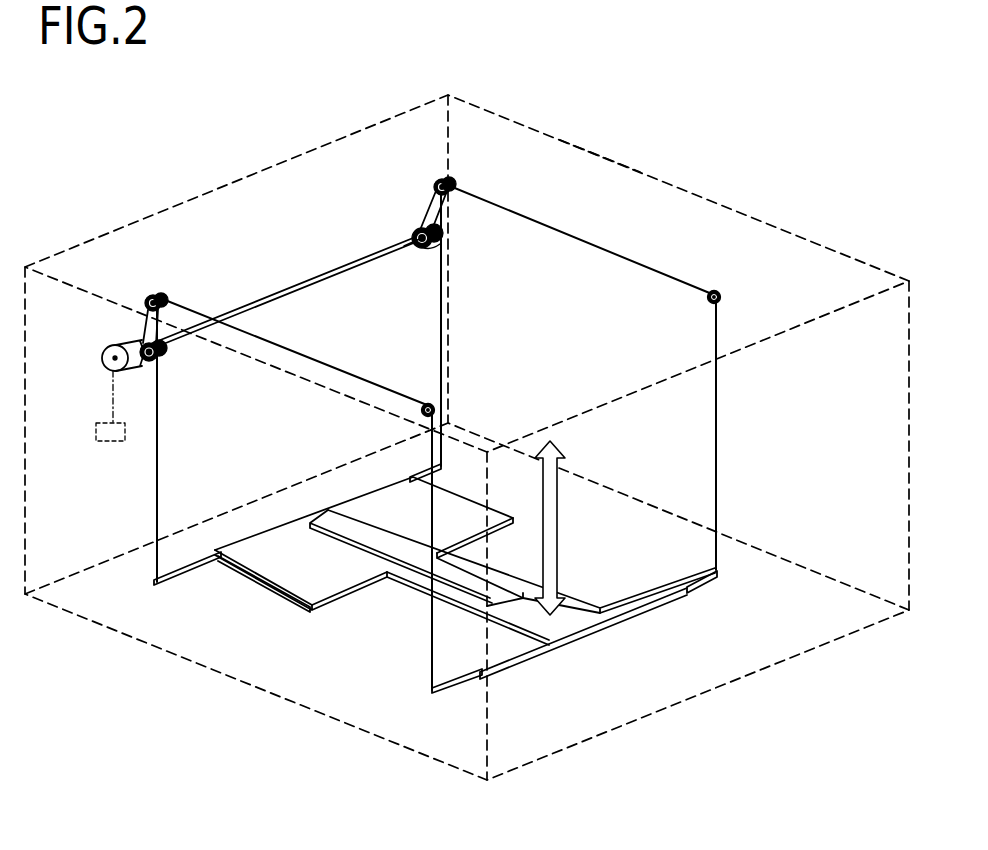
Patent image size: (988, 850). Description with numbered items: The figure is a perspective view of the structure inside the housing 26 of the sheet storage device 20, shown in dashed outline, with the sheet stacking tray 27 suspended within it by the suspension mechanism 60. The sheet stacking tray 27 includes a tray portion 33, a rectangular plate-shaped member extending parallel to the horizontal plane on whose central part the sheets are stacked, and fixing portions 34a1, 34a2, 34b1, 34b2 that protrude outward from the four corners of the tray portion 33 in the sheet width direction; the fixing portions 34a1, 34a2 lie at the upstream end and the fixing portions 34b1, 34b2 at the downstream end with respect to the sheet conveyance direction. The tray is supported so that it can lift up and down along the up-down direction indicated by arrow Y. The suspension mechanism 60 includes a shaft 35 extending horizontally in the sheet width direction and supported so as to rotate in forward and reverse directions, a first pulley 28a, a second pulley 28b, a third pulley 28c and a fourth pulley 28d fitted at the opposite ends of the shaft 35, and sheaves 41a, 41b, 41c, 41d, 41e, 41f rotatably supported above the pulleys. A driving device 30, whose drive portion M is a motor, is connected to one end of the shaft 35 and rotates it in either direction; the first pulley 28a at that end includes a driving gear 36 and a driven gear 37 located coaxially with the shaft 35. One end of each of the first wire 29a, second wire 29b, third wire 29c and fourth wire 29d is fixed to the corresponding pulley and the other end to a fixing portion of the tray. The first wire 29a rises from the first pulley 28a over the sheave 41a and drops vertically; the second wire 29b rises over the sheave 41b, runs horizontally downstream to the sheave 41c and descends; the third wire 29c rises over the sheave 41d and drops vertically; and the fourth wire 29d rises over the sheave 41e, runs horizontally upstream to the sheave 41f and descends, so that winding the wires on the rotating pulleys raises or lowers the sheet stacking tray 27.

The sheet storage device 20 is at (510, 104).
The housing 26 is at (603, 150).
The sheet stacking tray 27 is at (328, 494).
The first pulley 28a is at (134, 340).
The second pulley 28b is at (160, 358).
The third pulley 28c is at (418, 229).
The fourth pulley 28d is at (434, 236).
The first wire 29a is at (155, 505).
The second wire 29b is at (430, 624).
The third wire 29c is at (440, 335).
The fourth wire 29d is at (717, 414).
The driving device 30 is at (100, 341).
The tray portion 33 is at (292, 583).
The fixing portion 34a1 is at (181, 575).
The fixing portion 34a2 is at (434, 468).
The fixing portion 34b1 is at (452, 683).
The fixing portion 34b2 is at (722, 577).
The shaft 35 is at (303, 286).
The driving gear 36 is at (420, 250).
The driven gear 37 is at (410, 238).
The sheave 41a is at (152, 296).
The sheave 41b is at (164, 295).
The sheave 41c is at (426, 404).
The sheave 41d is at (435, 188).
The sheave 41e is at (451, 184).
The sheave 41f is at (708, 298).
The suspension mechanism 60 is at (654, 254).
The drive portion M is at (95, 433).
The arrow Y is at (557, 528).